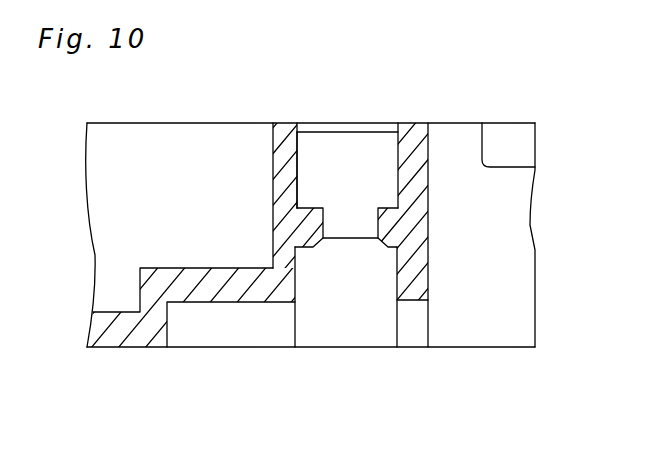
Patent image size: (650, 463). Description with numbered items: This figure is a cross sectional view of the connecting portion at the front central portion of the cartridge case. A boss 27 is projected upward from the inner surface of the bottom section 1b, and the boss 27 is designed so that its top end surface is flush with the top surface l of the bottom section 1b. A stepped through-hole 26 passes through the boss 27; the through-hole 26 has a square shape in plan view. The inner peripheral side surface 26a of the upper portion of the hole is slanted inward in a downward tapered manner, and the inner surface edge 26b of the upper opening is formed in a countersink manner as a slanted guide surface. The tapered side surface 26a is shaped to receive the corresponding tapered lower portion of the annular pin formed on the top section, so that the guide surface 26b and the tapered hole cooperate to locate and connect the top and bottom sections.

The top surface l is at (133, 123).
The bottom section 1b is at (112, 342).
The stepped through-hole 26 is at (362, 138).
The inner peripheral side surface 26a is at (298, 178).
The inner surface edge 26b is at (297, 124).
The boss 27 is at (420, 206).